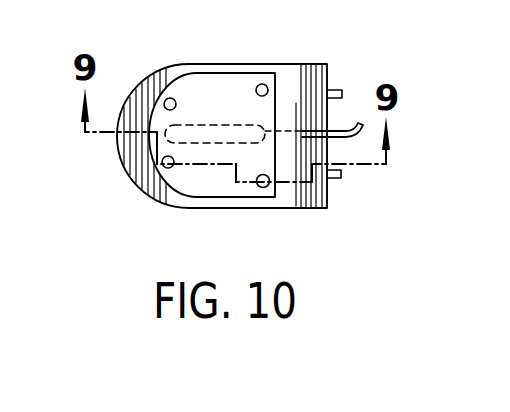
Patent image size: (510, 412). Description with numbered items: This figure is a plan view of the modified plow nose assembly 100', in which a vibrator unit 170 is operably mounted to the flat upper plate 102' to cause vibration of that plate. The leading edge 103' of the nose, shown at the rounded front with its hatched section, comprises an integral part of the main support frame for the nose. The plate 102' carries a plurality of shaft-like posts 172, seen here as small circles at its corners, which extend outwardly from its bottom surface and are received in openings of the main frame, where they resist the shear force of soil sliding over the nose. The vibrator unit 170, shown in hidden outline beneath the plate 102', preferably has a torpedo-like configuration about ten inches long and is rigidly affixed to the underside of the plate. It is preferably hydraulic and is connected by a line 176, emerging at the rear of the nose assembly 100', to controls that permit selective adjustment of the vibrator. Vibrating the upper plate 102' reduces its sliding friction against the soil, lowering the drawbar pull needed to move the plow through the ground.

The nose assembly 100' is at (229, 105).
The flat upper plate 102' is at (231, 102).
The leading edge 103' is at (109, 136).
The vibrator unit 170 is at (213, 144).
The shaft-like posts 172 is at (170, 98).
The line 176 is at (347, 123).